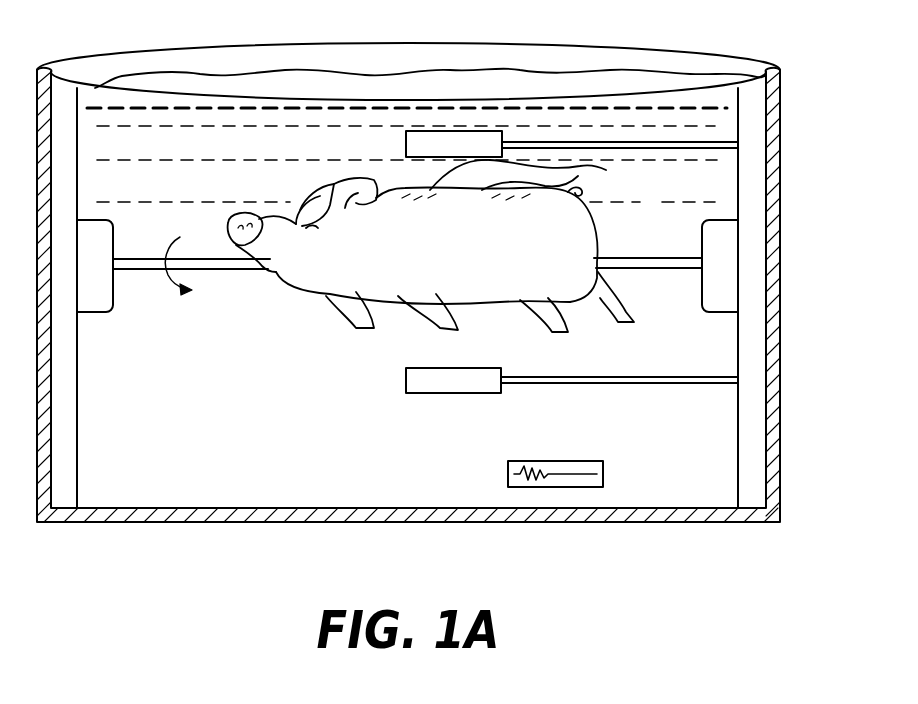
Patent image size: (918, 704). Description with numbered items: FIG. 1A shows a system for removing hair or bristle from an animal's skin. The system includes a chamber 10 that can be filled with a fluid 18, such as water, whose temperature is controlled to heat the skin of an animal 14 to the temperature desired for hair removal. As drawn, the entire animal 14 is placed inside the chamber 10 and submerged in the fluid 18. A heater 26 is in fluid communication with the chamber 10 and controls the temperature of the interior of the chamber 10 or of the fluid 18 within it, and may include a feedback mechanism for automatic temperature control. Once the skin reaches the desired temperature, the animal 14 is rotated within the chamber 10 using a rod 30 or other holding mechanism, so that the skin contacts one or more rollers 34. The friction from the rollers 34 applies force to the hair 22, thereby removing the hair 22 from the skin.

The chamber 10 is at (798, 262).
The animal 14 is at (431, 272).
The fluid 18 is at (504, 77).
The hair 22 is at (525, 169).
The heater 26 is at (620, 473).
The rod 30 is at (655, 257).
The rollers 34 is at (406, 140).